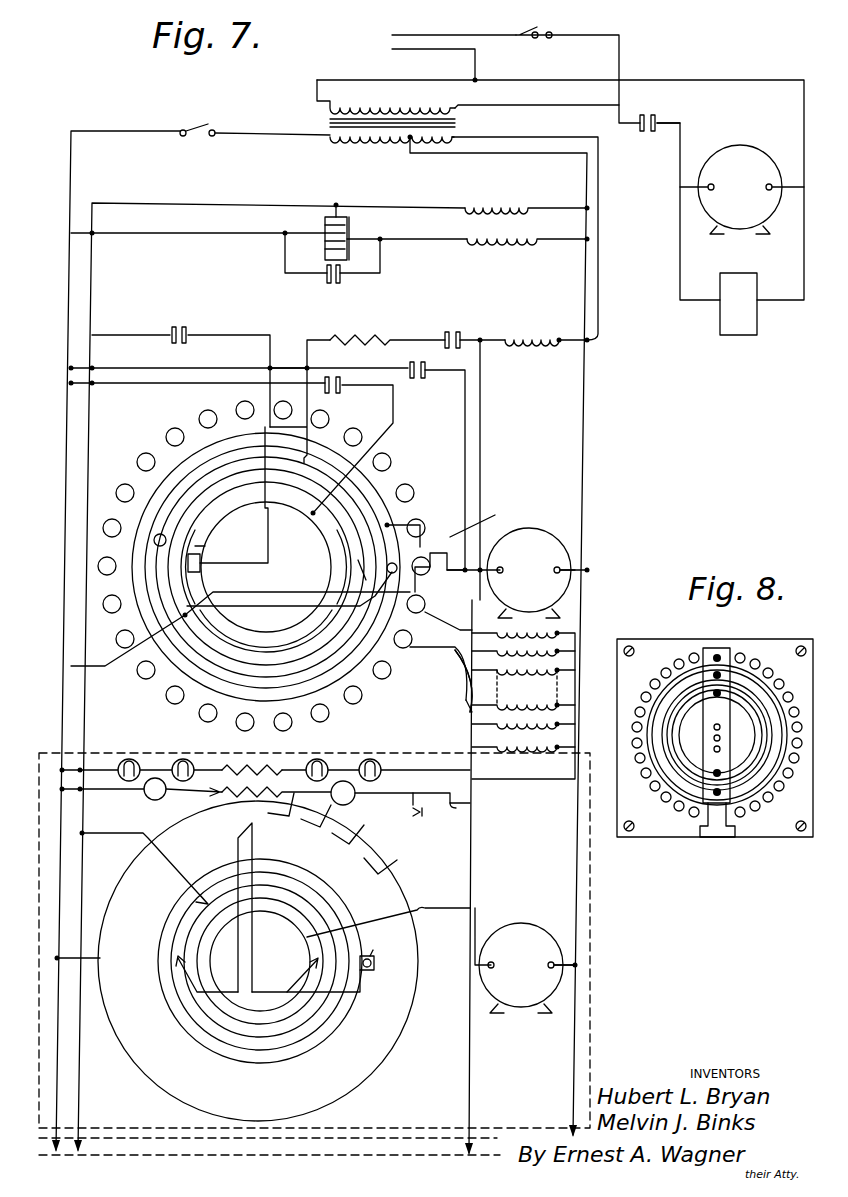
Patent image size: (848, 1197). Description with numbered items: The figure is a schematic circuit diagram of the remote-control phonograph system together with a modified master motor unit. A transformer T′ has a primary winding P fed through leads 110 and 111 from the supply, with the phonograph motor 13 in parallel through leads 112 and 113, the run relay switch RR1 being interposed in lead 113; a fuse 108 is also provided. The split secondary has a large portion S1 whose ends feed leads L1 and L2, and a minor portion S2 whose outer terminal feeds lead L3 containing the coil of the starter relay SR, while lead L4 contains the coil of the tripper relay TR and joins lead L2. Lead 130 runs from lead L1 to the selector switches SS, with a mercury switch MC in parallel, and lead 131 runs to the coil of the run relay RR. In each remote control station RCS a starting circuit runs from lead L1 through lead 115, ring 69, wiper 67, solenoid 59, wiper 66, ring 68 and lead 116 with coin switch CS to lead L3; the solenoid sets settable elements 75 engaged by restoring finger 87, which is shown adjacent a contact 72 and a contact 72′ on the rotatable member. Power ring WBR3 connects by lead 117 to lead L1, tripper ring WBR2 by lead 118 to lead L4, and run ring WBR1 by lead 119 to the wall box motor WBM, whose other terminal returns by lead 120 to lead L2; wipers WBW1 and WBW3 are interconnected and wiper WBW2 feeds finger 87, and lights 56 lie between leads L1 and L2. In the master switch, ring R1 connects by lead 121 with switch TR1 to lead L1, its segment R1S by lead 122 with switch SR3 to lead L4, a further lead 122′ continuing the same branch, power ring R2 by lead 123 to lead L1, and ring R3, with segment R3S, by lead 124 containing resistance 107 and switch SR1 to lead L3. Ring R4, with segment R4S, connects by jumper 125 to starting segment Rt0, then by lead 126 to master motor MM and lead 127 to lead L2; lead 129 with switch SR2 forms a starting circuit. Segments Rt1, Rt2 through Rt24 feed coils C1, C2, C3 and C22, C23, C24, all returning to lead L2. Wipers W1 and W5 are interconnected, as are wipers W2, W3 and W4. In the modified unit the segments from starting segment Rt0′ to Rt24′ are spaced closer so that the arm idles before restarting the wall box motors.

In FIG. 7, the primary winding P is at (330, 101).
In FIG. 7, the lead 110 is at (394, 49).
In FIG. 7, the lead 111 is at (612, 104).
In FIG. 7, the lead 112 is at (733, 80).
In FIG. 7, the run relay switch RR1 is at (652, 114).
In FIG. 7, the lead 113 is at (648, 127).
In FIG. 7, the phonograph motor 13 is at (752, 165).
In FIG. 7, the fuse 108 is at (198, 130).
In FIG. 7, the transformer T′ is at (312, 120).
In FIG. 7, the lead L3 is at (515, 135).
In FIG. 7, the large portion of secondary winding S1 is at (368, 140).
In FIG. 7, the minor portion of secondary winding S2 is at (430, 140).
In FIG. 7, the lead L4 is at (204, 205).
In FIG. 7, the selector switches SS is at (336, 215).
In FIG. 7, the tripper relay TR is at (492, 206).
In FIG. 7, the run relay RR is at (505, 238).
In FIG. 7, the lead 130 is at (183, 234).
In FIG. 7, the lead 131 is at (415, 240).
In FIG. 7, the mercury switch MC is at (338, 284).
In FIG. 7, the lead L1 is at (70, 283).
In FIG. 7, the lead 122 is at (117, 334).
In FIG. 7, the starter relay switch SR3 is at (182, 322).
In FIG. 7, the lead 124 is at (307, 340).
In FIG. 7, the resistance 107 is at (362, 334).
In FIG. 7, the starter relay switch SR1 is at (452, 331).
In FIG. 7, the starter relay SR is at (535, 339).
In FIG. 7, the lead 129 is at (145, 367).
In FIG. 7, the lead 122′ is at (268, 354).
In FIG. 7, the lead 121 is at (138, 384).
In FIG. 7, the tripper relay switch TR1 is at (340, 394).
In FIG. 7, the starter relay switch SR2 is at (415, 380).
In FIG. 7, the lead L2 is at (587, 407).
In FIG. 7, the segment of ring R3 R3S is at (156, 536).
In FIG. 7, the segment of ring R1 R1S is at (204, 560).
In FIG. 7, the segment of ring R4 R4S is at (388, 566).
In FIG. 7, the wiper W1 is at (208, 570).
In FIG. 7, the wiper W2 is at (352, 576).
In FIG. 7, the wiper W4 is at (430, 556).
In FIG. 7, the wiper W5 is at (447, 562).
In FIG. 7, the rivet-like segment Rt24 is at (412, 502).
In FIG. 7, the jumper 125 is at (482, 520).
In FIG. 7, the master motor MM is at (540, 548).
In FIG. 7, the lead 126 is at (492, 572).
In FIG. 7, the lead 127 is at (575, 572).
In FIG. 7, the starting segment Rt0 is at (285, 566).
In FIG. 7, the rivet-like segment Rt1 is at (438, 663).
In FIG. 7, the rivet-like segment Rt2 is at (439, 681).
In FIG. 7, the coil C1 is at (523, 702).
In FIG. 7, the coil C2 is at (523, 653).
In FIG. 7, the coil C3 is at (523, 684).
In FIG. 7, the coil C22 is at (523, 707).
In FIG. 7, the coil C23 is at (523, 726).
In FIG. 7, the coil C24 is at (523, 748).
In FIG. 7, the wiper W3 is at (160, 574).
In FIG. 7, the lead 123 is at (105, 667).
In FIG. 7, the ring R1 is at (237, 630).
In FIG. 7, the ring R2 is at (246, 652).
In FIG. 7, the ring R3 is at (268, 673).
In FIG. 7, the ring R4 is at (297, 688).
In FIG. 7, the lights 56 is at (265, 770).
In FIG. 7, the lead 115 is at (118, 790).
In FIG. 7, the conducting ring 69 is at (153, 801).
In FIG. 7, the second wiper 67 is at (193, 803).
In FIG. 7, the solenoid 59 is at (222, 797).
In FIG. 7, the first wiper 66 is at (348, 804).
In FIG. 7, the conducting ring 68 is at (412, 805).
In FIG. 7, the coin controlled switch CS is at (424, 814).
In FIG. 7, the lead 116 is at (460, 808).
In FIG. 7, the lead 118 is at (115, 835).
In FIG. 7, the restoring finger 87 is at (238, 851).
In FIG. 7, the settable elements 75 is at (382, 853).
In FIG. 7, the lead 119 is at (433, 907).
In FIG. 7, the wall box motor WBM is at (523, 930).
In FIG. 7, the lead 117 is at (98, 962).
In FIG. 7, the wiper WBW1 is at (311, 966).
In FIG. 7, the contact 72′ is at (371, 955).
In FIG. 7, the contact 72 is at (376, 960).
In FIG. 7, the wiper WBW2 is at (178, 962).
In FIG. 7, the wiper WBW3 is at (378, 970).
In FIG. 7, the selector or tripper ring WBR2 is at (213, 1025).
In FIG. 7, the run ring WBR1 is at (265, 1018).
In FIG. 7, the power ring WBR3 is at (362, 1078).
In FIG. 7, the remote control stations RCS is at (590, 965).
In FIG. 7, the lead 120 is at (562, 1000).
In FIG. 8, the last segment Rt24′ is at (795, 752).
In FIG. 8, the starting segment Rt0′ is at (716, 838).